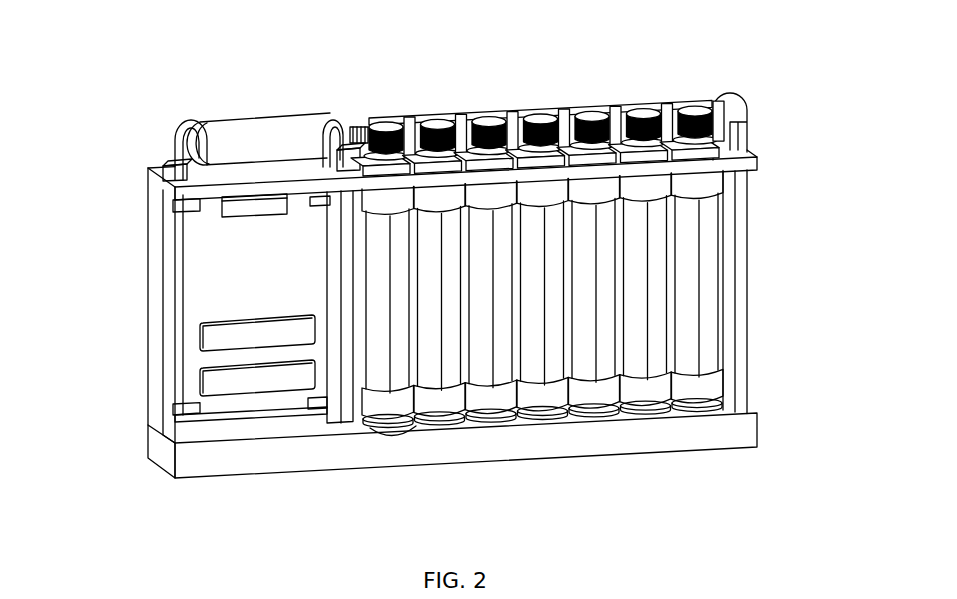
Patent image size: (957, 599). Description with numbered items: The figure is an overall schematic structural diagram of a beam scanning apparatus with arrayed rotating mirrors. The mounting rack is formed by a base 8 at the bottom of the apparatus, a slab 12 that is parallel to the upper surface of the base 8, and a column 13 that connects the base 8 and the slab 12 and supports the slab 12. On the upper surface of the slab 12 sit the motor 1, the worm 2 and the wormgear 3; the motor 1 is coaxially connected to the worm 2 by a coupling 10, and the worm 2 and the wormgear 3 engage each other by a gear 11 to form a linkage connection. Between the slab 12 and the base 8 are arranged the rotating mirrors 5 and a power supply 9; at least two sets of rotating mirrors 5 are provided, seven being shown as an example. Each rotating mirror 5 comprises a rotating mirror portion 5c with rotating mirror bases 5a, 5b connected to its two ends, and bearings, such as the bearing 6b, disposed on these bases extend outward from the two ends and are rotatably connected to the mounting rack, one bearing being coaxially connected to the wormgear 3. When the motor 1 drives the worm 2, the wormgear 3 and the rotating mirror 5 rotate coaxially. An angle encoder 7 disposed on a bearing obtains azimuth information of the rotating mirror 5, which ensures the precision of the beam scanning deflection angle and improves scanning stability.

The motor 1 is at (290, 117).
The worm 2 is at (505, 115).
The wormgear 3 is at (662, 103).
The rotating mirror 5 is at (626, 287).
The rotating mirror base 5a is at (703, 195).
The rotating mirror base 5b is at (600, 382).
The rotating mirror portion 5c is at (708, 317).
The bearing 6b is at (722, 404).
The angle encoder 7 is at (397, 440).
The base 8 is at (205, 463).
The power supply 9 is at (218, 260).
The coupling 10 is at (357, 123).
The gear 11 is at (580, 110).
The slab 12 is at (757, 153).
The column 13 is at (147, 303).